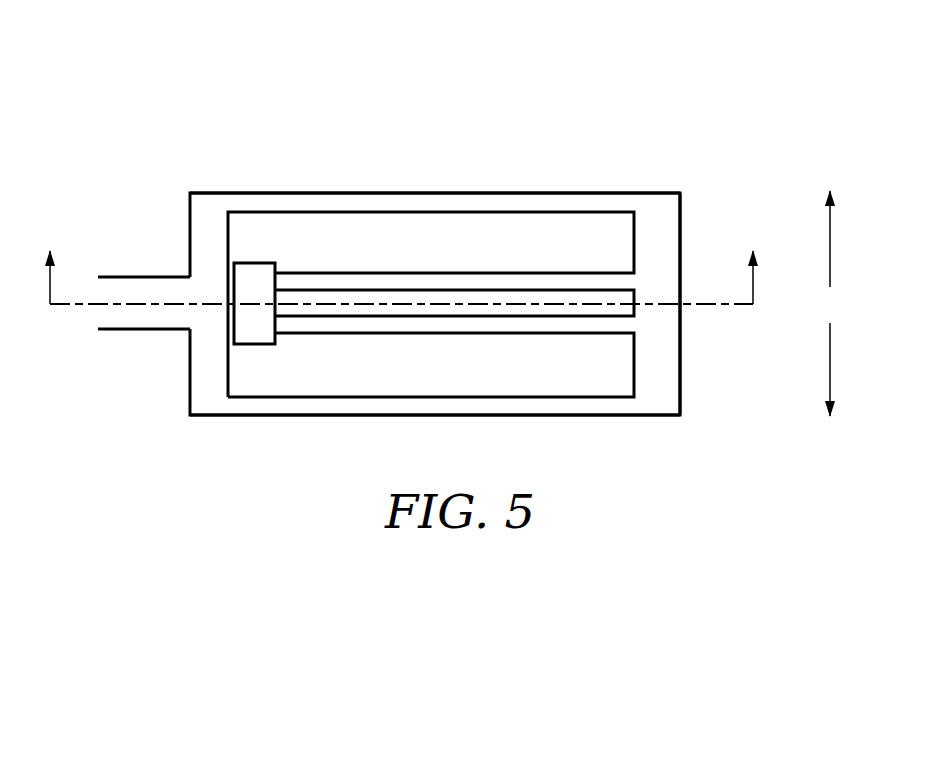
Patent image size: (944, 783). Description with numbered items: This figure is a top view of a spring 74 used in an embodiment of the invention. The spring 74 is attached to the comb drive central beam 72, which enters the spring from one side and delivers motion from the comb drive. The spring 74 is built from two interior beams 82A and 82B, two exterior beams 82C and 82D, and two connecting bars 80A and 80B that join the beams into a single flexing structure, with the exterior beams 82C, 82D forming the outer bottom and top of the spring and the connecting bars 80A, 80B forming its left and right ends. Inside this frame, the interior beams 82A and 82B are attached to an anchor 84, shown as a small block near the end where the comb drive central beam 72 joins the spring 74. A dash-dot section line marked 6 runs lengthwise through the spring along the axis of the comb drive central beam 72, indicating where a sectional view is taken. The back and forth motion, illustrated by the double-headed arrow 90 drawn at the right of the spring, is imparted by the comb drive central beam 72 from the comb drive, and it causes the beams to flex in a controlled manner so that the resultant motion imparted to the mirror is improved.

The section line 6- 6 is at (401, 277).
The comb drive central beam 72 is at (110, 276).
The spring 74 is at (376, 97).
The connecting bar 80A is at (188, 390).
The connecting bar 80B is at (684, 384).
The interior beam 82A is at (452, 325).
The interior beam 82B is at (487, 280).
The exterior beam 82C is at (584, 418).
The exterior beam 82D is at (526, 190).
The anchor 84 is at (254, 280).
The arrow 90 is at (832, 303).